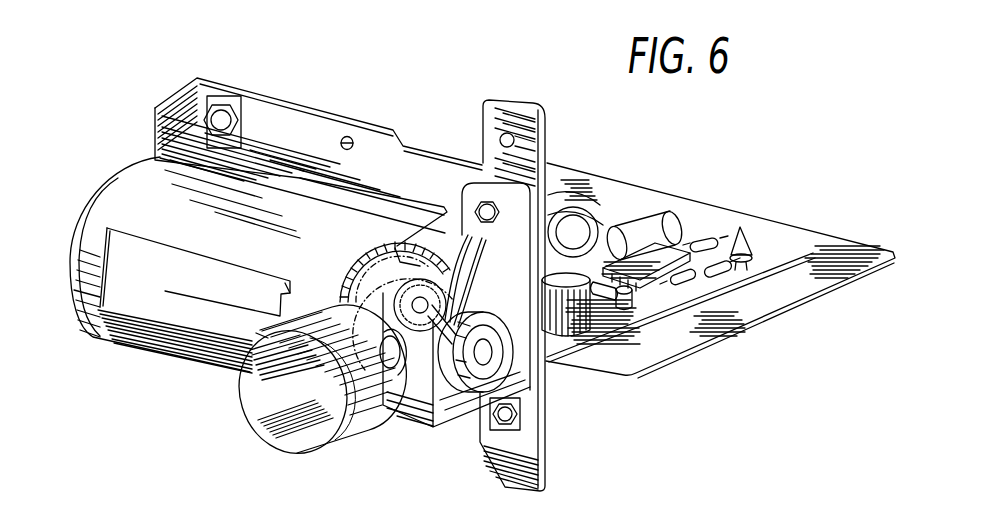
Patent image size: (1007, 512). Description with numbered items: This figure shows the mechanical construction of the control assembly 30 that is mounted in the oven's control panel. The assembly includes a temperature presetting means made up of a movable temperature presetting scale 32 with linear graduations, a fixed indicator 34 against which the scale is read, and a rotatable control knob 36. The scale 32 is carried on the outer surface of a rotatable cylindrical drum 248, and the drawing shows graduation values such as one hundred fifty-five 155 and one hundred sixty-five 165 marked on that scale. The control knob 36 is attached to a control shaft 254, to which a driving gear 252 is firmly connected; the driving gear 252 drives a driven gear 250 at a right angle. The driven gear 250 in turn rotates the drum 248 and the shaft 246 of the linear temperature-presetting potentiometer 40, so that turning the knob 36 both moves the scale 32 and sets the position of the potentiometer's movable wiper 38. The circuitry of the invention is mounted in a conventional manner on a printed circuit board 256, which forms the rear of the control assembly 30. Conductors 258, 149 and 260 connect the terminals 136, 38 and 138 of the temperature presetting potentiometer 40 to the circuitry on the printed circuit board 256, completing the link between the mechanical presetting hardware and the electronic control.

The control assembly 30 is at (612, 428).
The temperature presetting scale 32 is at (172, 270).
The fixed indicator 34 is at (278, 292).
The control knob 36 is at (257, 400).
The movable wiper 38 is at (494, 318).
The linear temperature-presetting potentiometer 40 is at (443, 383).
The terminal 136 is at (420, 320).
The terminal 138 is at (484, 300).
The conductor 149 is at (489, 264).
The dial marking 155 is at (288, 291).
The dial marking 165 is at (262, 336).
The potentiometer shaft 246 is at (392, 370).
The rotatable cylindrical drum 248 is at (392, 243).
The driven gear 250 is at (390, 246).
The driving gear 252 is at (390, 300).
The control shaft 254 is at (381, 342).
The printed circuit board 256 is at (622, 206).
The conductor 258 is at (457, 262).
The conductor 260 is at (486, 268).